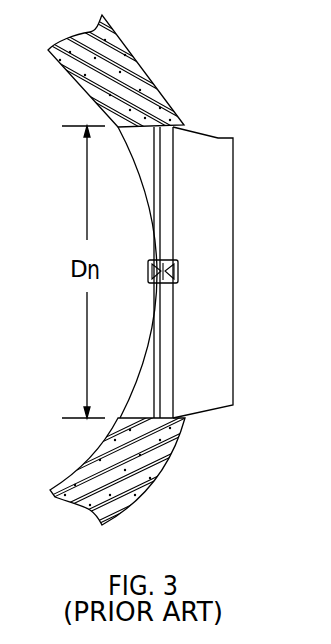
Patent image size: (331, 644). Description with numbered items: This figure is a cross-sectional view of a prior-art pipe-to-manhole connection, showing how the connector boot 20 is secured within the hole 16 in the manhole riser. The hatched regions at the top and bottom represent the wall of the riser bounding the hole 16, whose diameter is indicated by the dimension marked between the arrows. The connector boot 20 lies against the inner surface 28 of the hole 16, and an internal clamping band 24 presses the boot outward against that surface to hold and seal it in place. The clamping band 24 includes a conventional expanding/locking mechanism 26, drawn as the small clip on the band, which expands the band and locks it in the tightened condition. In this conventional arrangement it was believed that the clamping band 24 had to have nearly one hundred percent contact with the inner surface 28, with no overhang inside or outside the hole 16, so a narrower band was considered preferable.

The hole 16 is at (140, 238).
The connector boot 20 is at (210, 136).
The internal clamping band 24 is at (167, 335).
The expanding/locking mechanism 26 is at (178, 266).
The inner surface 28 is at (142, 150).